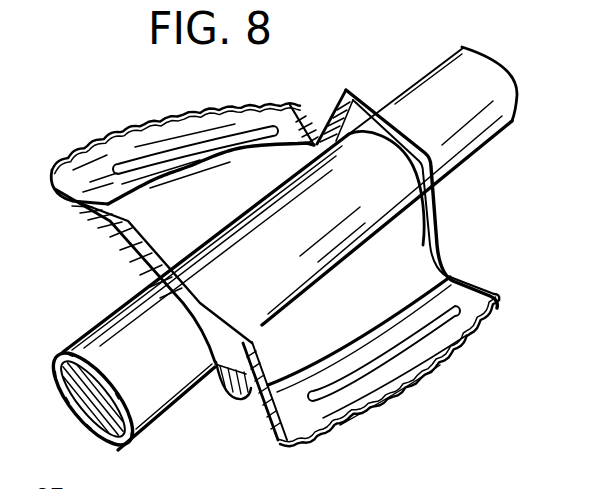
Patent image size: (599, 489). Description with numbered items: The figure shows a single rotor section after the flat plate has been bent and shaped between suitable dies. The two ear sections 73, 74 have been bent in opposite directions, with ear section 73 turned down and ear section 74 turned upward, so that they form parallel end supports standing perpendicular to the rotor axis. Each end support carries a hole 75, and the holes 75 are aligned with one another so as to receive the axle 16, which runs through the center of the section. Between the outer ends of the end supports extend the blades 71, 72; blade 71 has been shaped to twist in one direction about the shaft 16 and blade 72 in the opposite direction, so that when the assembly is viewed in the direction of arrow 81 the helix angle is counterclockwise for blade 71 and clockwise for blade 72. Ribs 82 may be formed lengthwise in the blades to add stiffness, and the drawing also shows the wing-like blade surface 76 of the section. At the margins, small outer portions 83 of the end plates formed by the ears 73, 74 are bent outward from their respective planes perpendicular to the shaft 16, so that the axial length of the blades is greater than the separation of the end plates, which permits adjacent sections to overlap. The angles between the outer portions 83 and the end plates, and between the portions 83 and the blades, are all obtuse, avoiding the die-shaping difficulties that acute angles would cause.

The axle 16 is at (110, 325).
The blade 71 is at (293, 107).
The blade 72 is at (388, 328).
The ear section 73 is at (227, 398).
The ear section 74 is at (357, 95).
The holes 75 is at (375, 152).
The upper wing 76 is at (174, 117).
The arrow 81 is at (177, 156).
The ribs 82 is at (367, 364).
The outer portions 83 is at (86, 201).